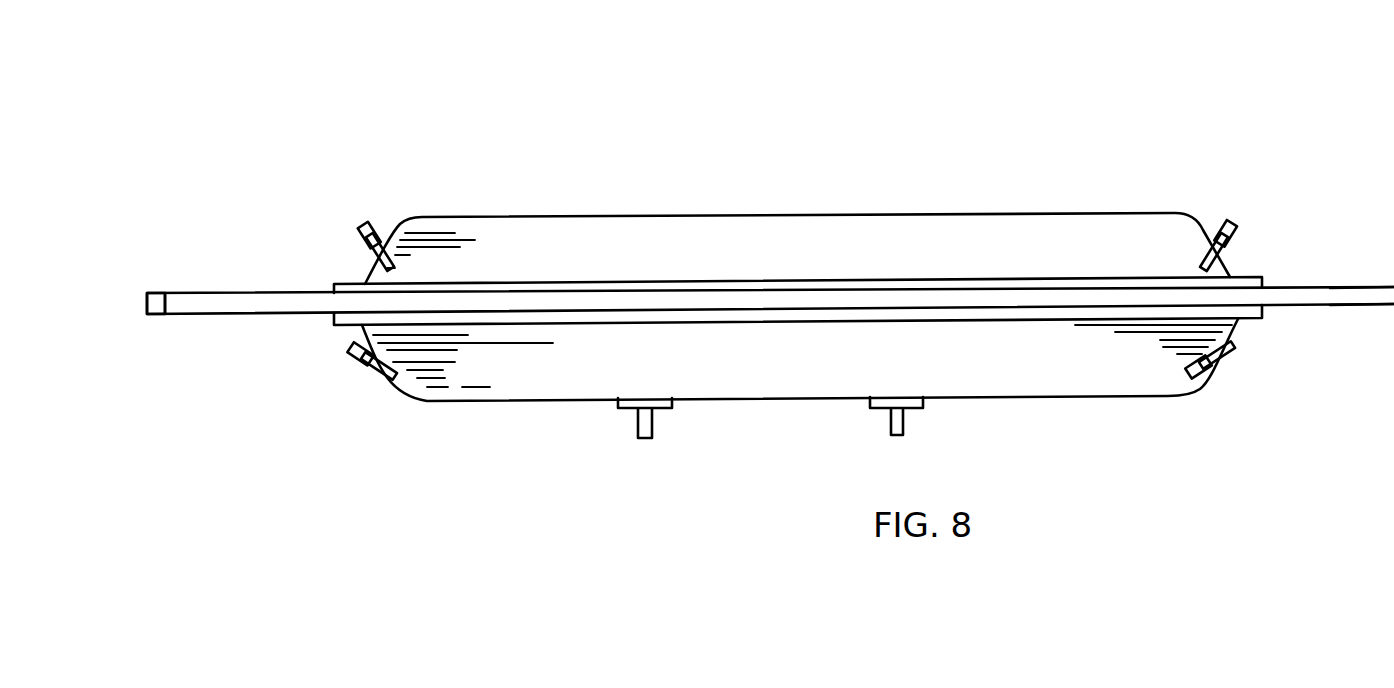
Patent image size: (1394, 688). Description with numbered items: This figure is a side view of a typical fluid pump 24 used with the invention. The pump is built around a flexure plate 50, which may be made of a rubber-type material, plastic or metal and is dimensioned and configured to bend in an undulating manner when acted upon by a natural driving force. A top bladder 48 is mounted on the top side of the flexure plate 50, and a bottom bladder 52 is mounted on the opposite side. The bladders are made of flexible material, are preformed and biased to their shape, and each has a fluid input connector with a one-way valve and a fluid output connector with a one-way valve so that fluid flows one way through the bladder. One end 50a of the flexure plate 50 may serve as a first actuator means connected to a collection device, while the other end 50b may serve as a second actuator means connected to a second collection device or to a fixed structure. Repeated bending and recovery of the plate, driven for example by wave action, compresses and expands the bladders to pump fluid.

The fluid pump 24 is at (800, 277).
The top bladder 48 is at (853, 214).
The flexure plate 50 is at (591, 298).
The one end of flexure plate 50a is at (172, 293).
The other end of flexure plate 50b is at (1392, 285).
The bottom bladder 52 is at (777, 398).